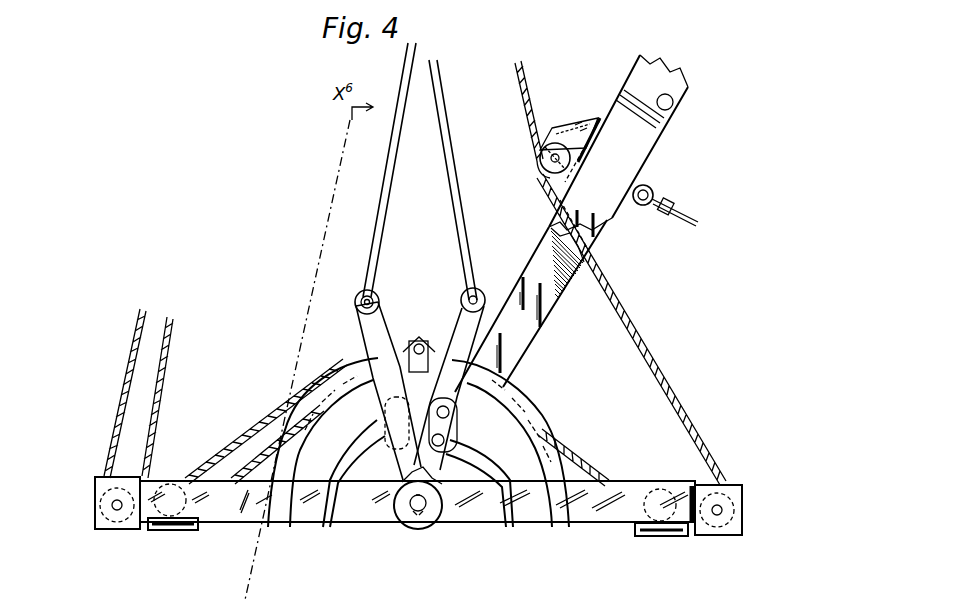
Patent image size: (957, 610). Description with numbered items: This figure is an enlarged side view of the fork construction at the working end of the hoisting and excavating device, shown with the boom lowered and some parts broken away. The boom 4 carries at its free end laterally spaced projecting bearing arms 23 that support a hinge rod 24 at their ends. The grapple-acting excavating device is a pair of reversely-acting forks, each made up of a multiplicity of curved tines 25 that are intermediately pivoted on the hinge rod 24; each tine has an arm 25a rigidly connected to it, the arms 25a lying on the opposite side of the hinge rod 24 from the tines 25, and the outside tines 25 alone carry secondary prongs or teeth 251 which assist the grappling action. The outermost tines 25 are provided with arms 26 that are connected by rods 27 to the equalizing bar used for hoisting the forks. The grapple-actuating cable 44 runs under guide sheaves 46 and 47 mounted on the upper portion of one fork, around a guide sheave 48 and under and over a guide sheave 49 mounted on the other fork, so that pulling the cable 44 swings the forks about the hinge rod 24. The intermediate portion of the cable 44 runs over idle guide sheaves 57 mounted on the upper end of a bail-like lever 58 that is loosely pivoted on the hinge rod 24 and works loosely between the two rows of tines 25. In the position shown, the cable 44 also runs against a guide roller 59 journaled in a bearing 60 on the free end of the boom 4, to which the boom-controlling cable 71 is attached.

The boom 4 is at (648, 82).
The bearing arms 23 is at (600, 233).
The hinge rod 24 is at (413, 508).
The curved tines 25 is at (332, 377).
The secondary prongs or teeth 251 is at (372, 440).
The arms 25a is at (243, 510).
The arms 26 is at (460, 320).
The rods 27 is at (452, 190).
The grapple-actuating cable 44 is at (127, 393).
The guide sheave 46 is at (733, 487).
The guide sheave 47 is at (655, 490).
The guide sheave 48 is at (190, 512).
The guide sheave 49 is at (118, 518).
The idle guide sheaves 57 is at (420, 338).
The bail-like lever 58 is at (415, 372).
The guide roller 59 is at (545, 172).
The bearing 60 is at (557, 136).
The cable 71 is at (668, 210).